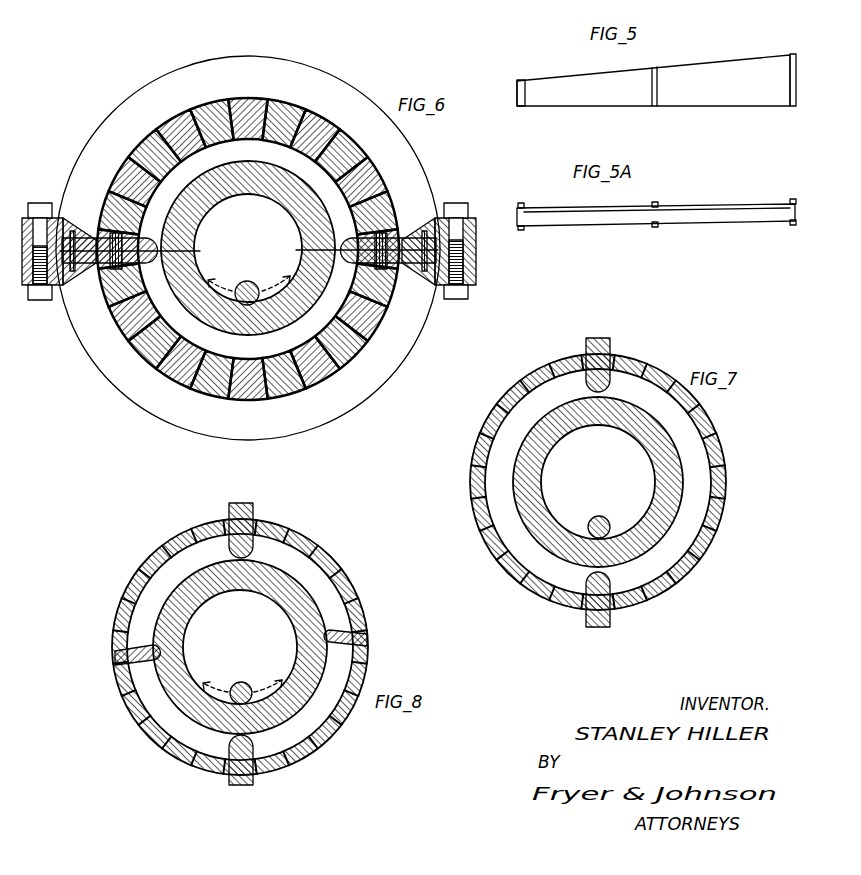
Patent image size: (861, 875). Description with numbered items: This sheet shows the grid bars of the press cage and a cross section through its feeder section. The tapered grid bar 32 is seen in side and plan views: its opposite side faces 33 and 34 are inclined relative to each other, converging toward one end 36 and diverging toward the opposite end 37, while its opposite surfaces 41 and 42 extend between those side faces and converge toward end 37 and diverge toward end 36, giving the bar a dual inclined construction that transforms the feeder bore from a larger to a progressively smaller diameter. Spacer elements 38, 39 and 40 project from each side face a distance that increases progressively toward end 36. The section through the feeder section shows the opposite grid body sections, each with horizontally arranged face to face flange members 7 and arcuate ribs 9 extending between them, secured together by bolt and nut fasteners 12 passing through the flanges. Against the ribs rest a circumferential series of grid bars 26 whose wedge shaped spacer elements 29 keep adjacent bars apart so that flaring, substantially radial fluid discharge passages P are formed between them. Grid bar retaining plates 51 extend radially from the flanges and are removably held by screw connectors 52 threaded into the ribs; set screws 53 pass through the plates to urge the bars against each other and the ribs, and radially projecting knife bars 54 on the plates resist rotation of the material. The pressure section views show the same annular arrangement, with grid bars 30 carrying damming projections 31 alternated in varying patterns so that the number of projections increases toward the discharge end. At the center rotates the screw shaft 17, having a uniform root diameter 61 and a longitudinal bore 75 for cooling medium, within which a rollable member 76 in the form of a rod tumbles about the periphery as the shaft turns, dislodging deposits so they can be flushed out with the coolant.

In FIG. 6, the flange members 7 is at (25, 218).
In FIG. 6, the arcuate ribs 9 is at (231, 70).
In FIG. 6, the bolt and nut fasteners 12 is at (40, 203).
In FIG. 6, the screw shaft 17 is at (265, 182).
In FIG. 7, the screw shaft 17 is at (628, 422).
In FIG. 8, the screw shaft 17 is at (296, 606).
In FIG. 6, the grid bar 26 is at (248, 243).
In FIG. 7, the grid bar 26 is at (726, 508).
In FIG. 8, the grid bar 26 is at (368, 618).
In FIG. 6, the wedge shaped spacer elements 29 is at (300, 112).
In FIG. 8, the grid bar 30 is at (115, 657).
In FIG. 8, the damming projections 31 is at (148, 651).
In FIG. 5, the inclined grid bar 32 is at (706, 60).
In FIG. 5A, the side face 33 is at (678, 207).
In FIG. 5A, the side face 34 is at (693, 223).
In FIG. 5, the end of bar 36 is at (797, 95).
In FIG. 5A, the end of bar 36 is at (797, 212).
In FIG. 5, the opposite end of bar 37 is at (517, 91).
In FIG. 5A, the opposite end of bar 37 is at (517, 215).
In FIG. 5, the spacer element 38 is at (520, 79).
In FIG. 5A, the spacer element 38 is at (521, 204).
In FIG. 5, the spacer element 39 is at (654, 67).
In FIG. 5A, the spacer element 39 is at (655, 202).
In FIG. 5, the spacer element 40 is at (792, 54).
In FIG. 5A, the spacer element 40 is at (792, 202).
In FIG. 5, the surface 41 is at (563, 78).
In FIG. 5, the surface 42 is at (562, 107).
In FIG. 6, the grid bar retaining plates 51 is at (96, 238).
In FIG. 7, the grid bar retaining plates 51 is at (600, 338).
In FIG. 8, the grid bar retaining plates 51 is at (243, 503).
In FIG. 6, the screw connectors 52 is at (105, 270).
In FIG. 6, the set screws 53 is at (134, 224).
In FIG. 6, the knife bars 54 is at (132, 240).
In FIG. 7, the knife bars 54 is at (590, 387).
In FIG. 8, the knife bars 54 is at (230, 555).
In FIG. 6, the root diameter 61 is at (243, 162).
In FIG. 6, the longitudinal bore 75 is at (239, 220).
In FIG. 7, the longitudinal bore 75 is at (591, 482).
In FIG. 8, the longitudinal bore 75 is at (224, 618).
In FIG. 6, the rollable member 76 is at (251, 283).
In FIG. 7, the rollable member 76 is at (606, 518).
In FIG. 8, the rollable member 76 is at (247, 684).
In FIG. 6, the fluid discharge passage P is at (184, 168).
In FIG. 7, the fluid discharge passage P is at (481, 430).
In FIG. 8, the fluid discharge passage P is at (352, 574).